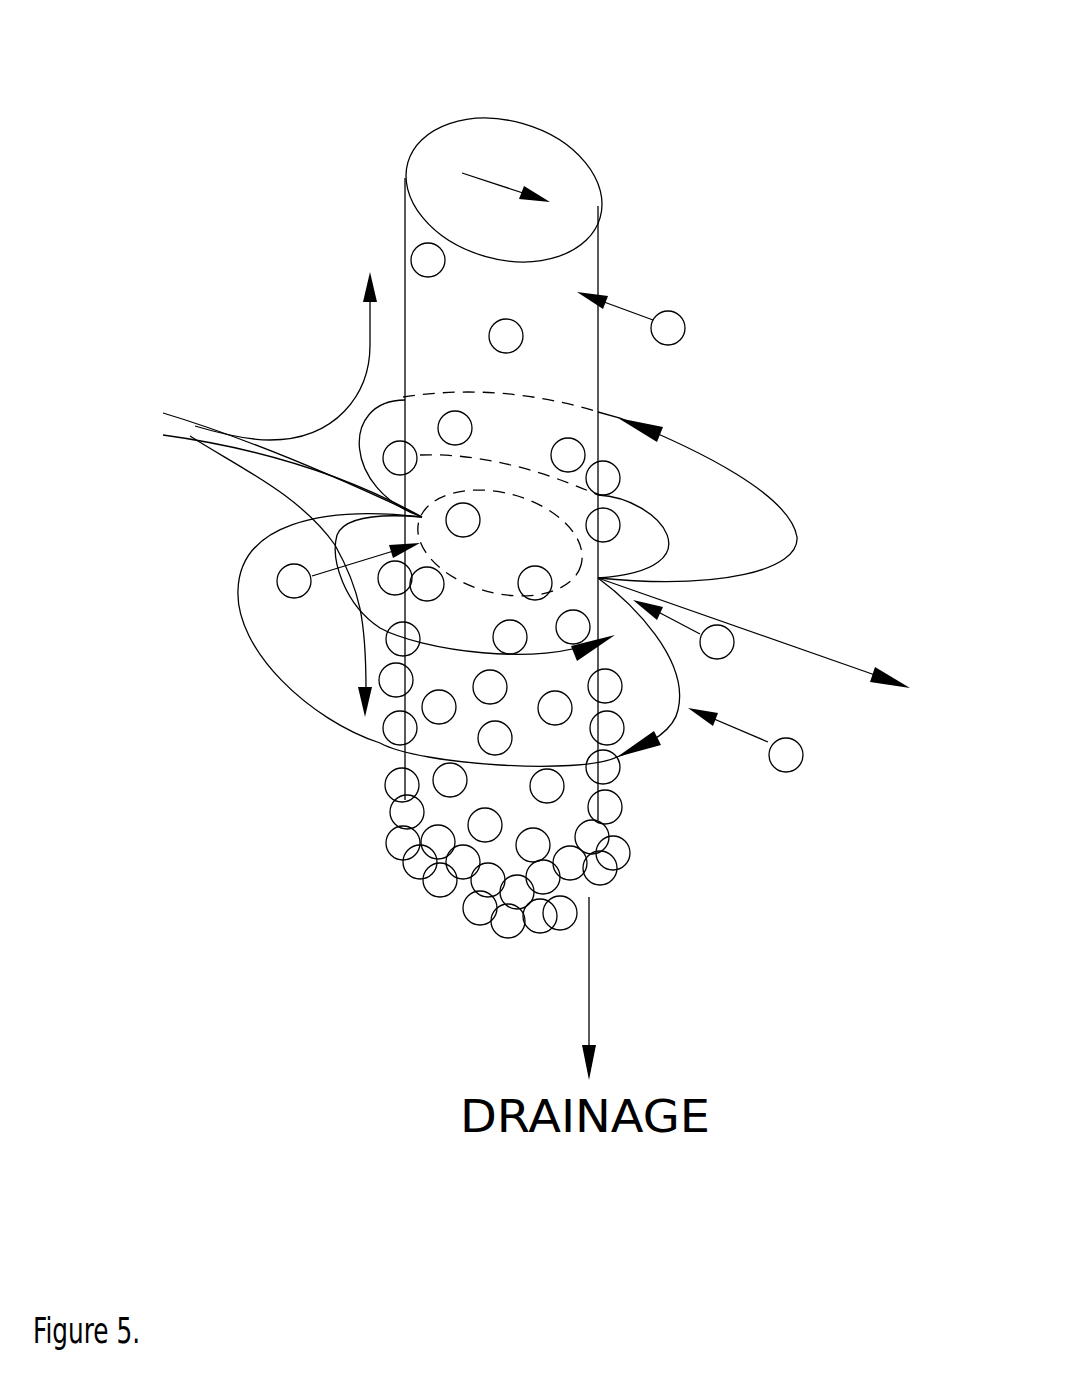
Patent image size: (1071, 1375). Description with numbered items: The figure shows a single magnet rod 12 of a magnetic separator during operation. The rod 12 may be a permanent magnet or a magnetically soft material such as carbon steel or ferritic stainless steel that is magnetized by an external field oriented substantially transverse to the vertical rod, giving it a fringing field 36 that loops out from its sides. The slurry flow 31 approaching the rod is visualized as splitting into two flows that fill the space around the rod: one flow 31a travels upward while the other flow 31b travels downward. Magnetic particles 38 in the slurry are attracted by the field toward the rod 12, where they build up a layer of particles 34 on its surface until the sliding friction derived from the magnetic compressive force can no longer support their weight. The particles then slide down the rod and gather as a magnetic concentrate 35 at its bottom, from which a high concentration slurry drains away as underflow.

The rod 12 is at (577, 117).
The slurry flow 31 is at (511, 579).
The upward flow 31a is at (287, 332).
The downward flow 31b is at (281, 603).
The layer of particles 34 is at (523, 340).
The magnetic concentrate 35 is at (550, 882).
The fringing field 36 is at (807, 525).
The magnetic particles 38 is at (803, 780).